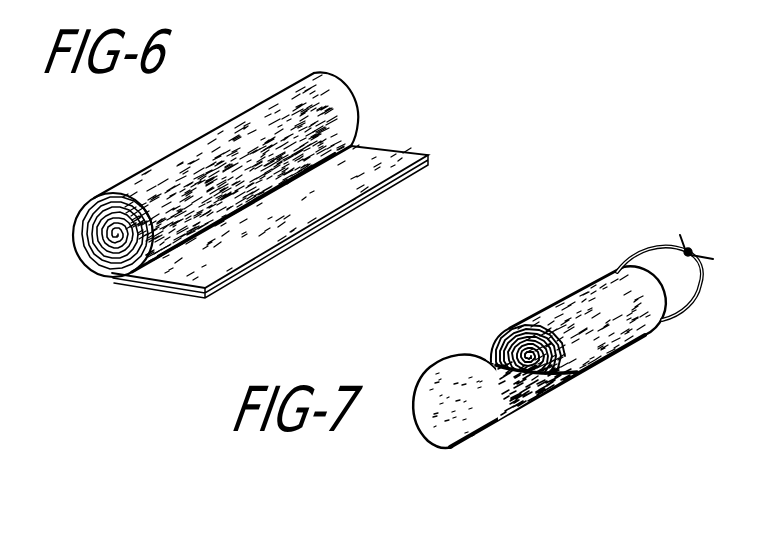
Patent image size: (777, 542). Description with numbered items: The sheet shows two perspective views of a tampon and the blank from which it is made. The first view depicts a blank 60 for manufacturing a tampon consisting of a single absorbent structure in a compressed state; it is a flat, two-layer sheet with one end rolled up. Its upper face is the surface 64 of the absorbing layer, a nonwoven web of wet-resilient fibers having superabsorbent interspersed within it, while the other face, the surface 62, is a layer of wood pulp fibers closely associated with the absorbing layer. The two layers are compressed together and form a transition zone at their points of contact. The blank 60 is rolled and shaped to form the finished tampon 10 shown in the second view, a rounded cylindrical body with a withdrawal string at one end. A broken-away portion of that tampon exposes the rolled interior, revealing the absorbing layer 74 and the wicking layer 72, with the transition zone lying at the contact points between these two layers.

In FIG. 6, the blank 60 is at (398, 97).
In FIG. 6, the surface of wood pulp fiber layer 62 is at (344, 215).
In FIG. 6, the surface of absorbing layer 64 is at (402, 157).
In FIG. 7, the tampon assembly 10 is at (582, 255).
In FIG. 7, the wicking layer 72 is at (507, 331).
In FIG. 7, the absorbing layer 74 is at (565, 364).